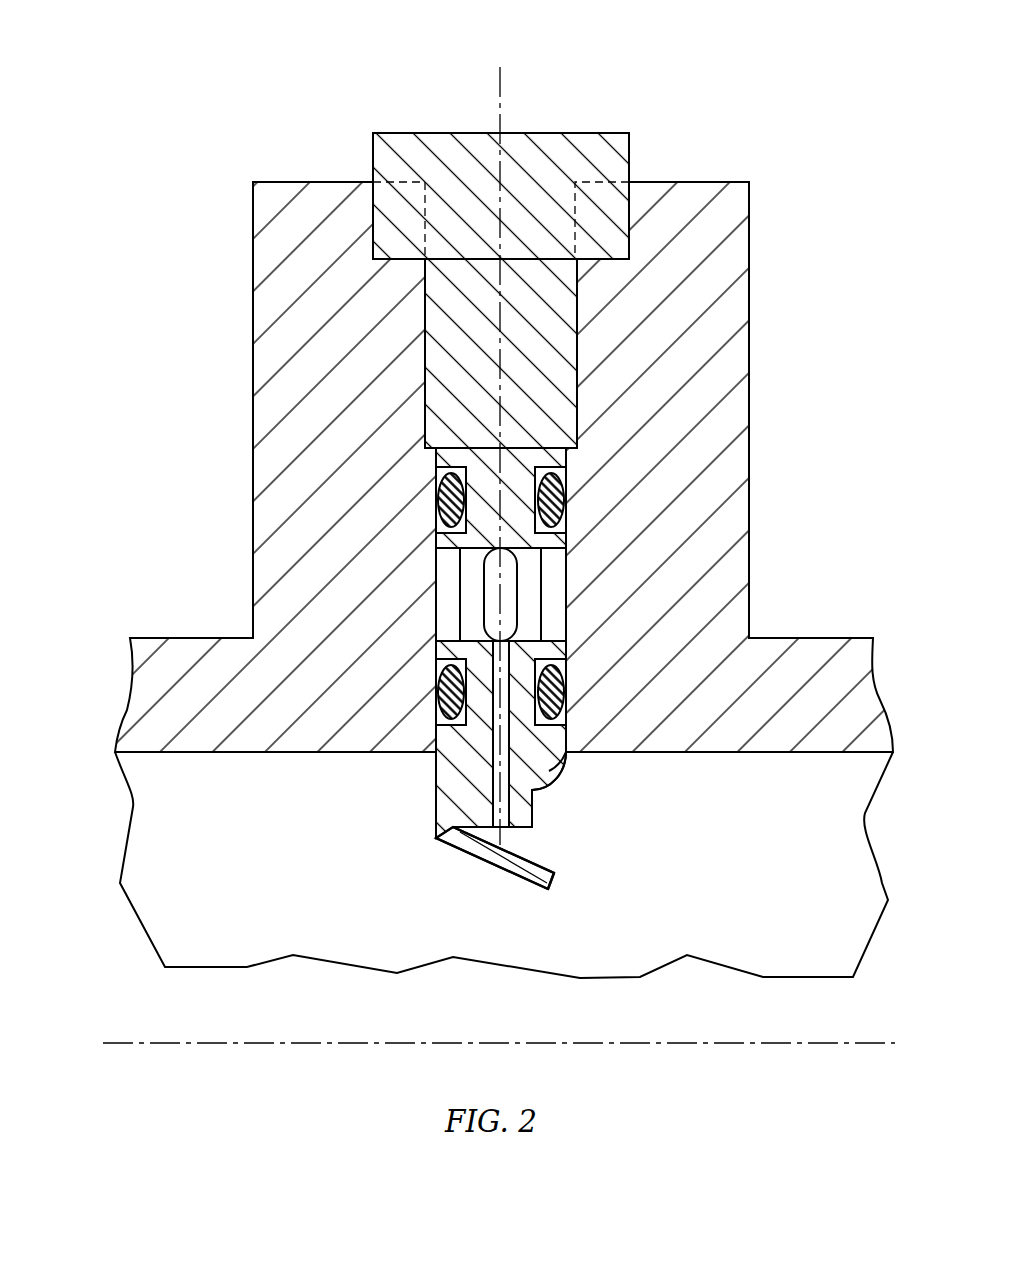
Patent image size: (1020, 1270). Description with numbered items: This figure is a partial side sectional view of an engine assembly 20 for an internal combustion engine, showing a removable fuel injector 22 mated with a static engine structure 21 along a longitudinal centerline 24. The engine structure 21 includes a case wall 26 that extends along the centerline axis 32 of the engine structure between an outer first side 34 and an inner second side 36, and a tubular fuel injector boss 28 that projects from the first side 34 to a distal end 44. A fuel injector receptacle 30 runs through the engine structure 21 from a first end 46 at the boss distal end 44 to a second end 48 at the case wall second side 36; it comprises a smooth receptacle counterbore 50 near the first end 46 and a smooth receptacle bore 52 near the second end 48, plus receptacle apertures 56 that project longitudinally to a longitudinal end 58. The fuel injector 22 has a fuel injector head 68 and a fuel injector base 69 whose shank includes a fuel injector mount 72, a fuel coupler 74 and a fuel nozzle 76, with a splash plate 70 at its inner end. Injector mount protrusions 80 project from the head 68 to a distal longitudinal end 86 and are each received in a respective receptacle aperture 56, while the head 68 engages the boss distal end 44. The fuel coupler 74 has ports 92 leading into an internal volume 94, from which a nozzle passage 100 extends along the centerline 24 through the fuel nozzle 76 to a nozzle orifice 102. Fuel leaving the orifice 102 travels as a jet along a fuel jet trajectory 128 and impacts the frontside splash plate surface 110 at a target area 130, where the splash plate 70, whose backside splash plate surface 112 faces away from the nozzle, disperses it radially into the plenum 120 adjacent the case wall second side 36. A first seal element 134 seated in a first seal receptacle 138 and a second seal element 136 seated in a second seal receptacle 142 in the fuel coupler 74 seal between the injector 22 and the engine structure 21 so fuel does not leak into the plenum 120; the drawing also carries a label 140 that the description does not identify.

The engine assembly 20 is at (212, 76).
The engine structure 21 is at (212, 230).
The fuel injector 22 is at (557, 99).
The longitudinal centerline 24 is at (498, 72).
The case wall 26 is at (118, 690).
The fuel injector boss 28 is at (250, 372).
The fuel injector receptacle 30 is at (568, 761).
The centerline axis of the engine structure 32 is at (884, 1047).
The first side of the case wall 34 is at (806, 638).
The second side of the case wall 36 is at (840, 752).
The distal end of the injector boss 44 is at (738, 182).
The first end of the injector receptacle 46 is at (425, 182).
The second end of the injector receptacle 48 is at (567, 763).
The receptacle counterbore 50 is at (580, 367).
The receptacle bore 52 is at (431, 764).
The receptacle apertures 56 is at (371, 215).
The longitudinal end of the receptacle aperture 58 is at (386, 252).
The fuel injector head 68 is at (641, 132).
The fuel injector base 69 is at (618, 407).
The splash plate 70 is at (477, 881).
The fuel injector mount 72 is at (580, 432).
The fuel injector fuel coupler 74 is at (572, 537).
The fuel injector fuel nozzle 76 is at (571, 745).
The injector mount protrusions 80 is at (385, 262).
The distal longitudinal end of the injector mount 86 is at (407, 262).
The ports 92 is at (446, 571).
The internal volume 94 is at (471, 597).
The nozzle passage 100 is at (494, 801).
The nozzle orifice 102 is at (505, 838).
The frontside splash plate surface 110 is at (560, 872).
The backside splash plate surface 112 is at (540, 894).
The plenum 120 is at (778, 881).
The fuel jet trajectory 128 is at (465, 844).
The target area 130 is at (514, 868).
The first seal element 134 is at (438, 497).
The second seal element 136 is at (439, 696).
The first seal receptacle 138 is at (437, 527).
The installed assembly 140 is at (695, 29).
The second seal receptacle 142 is at (438, 663).